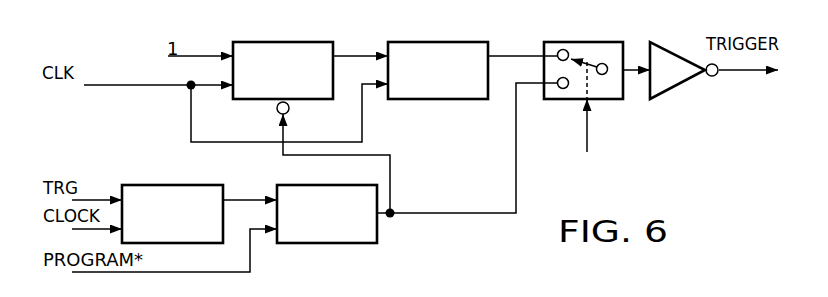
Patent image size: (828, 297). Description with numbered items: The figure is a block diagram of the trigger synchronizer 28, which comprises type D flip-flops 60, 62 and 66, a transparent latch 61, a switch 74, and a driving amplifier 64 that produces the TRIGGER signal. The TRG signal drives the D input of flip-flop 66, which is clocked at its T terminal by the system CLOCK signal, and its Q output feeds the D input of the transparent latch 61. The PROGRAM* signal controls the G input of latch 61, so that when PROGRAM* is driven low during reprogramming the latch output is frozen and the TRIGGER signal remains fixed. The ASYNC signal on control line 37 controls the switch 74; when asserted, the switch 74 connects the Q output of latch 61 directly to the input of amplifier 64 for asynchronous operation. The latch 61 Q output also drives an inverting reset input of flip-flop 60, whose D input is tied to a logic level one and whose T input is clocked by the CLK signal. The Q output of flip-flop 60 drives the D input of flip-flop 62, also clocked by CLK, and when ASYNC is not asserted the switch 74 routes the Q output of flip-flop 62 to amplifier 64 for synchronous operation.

The trigger synchronizer 28 is at (676, 146).
The type D flip-flop 60 is at (290, 41).
The type D flip-flop 62 is at (445, 41).
The switch 74 is at (599, 41).
The control line 37 is at (588, 152).
The driving amplifier 64 is at (668, 86).
The type D flip-flop 66 is at (174, 185).
The transparent latch 61 is at (334, 244).